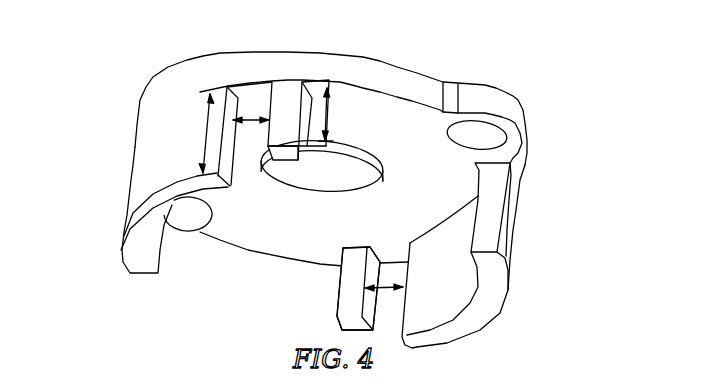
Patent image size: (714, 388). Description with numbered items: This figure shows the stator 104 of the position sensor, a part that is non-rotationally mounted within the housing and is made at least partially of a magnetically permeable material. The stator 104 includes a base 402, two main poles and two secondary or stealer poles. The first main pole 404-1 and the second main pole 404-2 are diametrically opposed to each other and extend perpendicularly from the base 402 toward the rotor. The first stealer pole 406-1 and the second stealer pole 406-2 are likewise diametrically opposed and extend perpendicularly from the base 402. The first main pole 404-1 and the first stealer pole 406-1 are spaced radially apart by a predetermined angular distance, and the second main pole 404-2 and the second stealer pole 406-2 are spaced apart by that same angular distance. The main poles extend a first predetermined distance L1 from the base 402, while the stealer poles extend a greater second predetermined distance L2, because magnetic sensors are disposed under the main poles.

The stator 104 is at (335, 187).
The base 402 is at (398, 75).
The first main pole 404-1 is at (287, 90).
The second main pole 404-2 is at (340, 288).
The first stealer pole 406-1 is at (130, 163).
The second stealer pole 406-2 is at (516, 235).
The first predetermined distance L1 is at (333, 115).
The second predetermined distance L2 is at (205, 130).